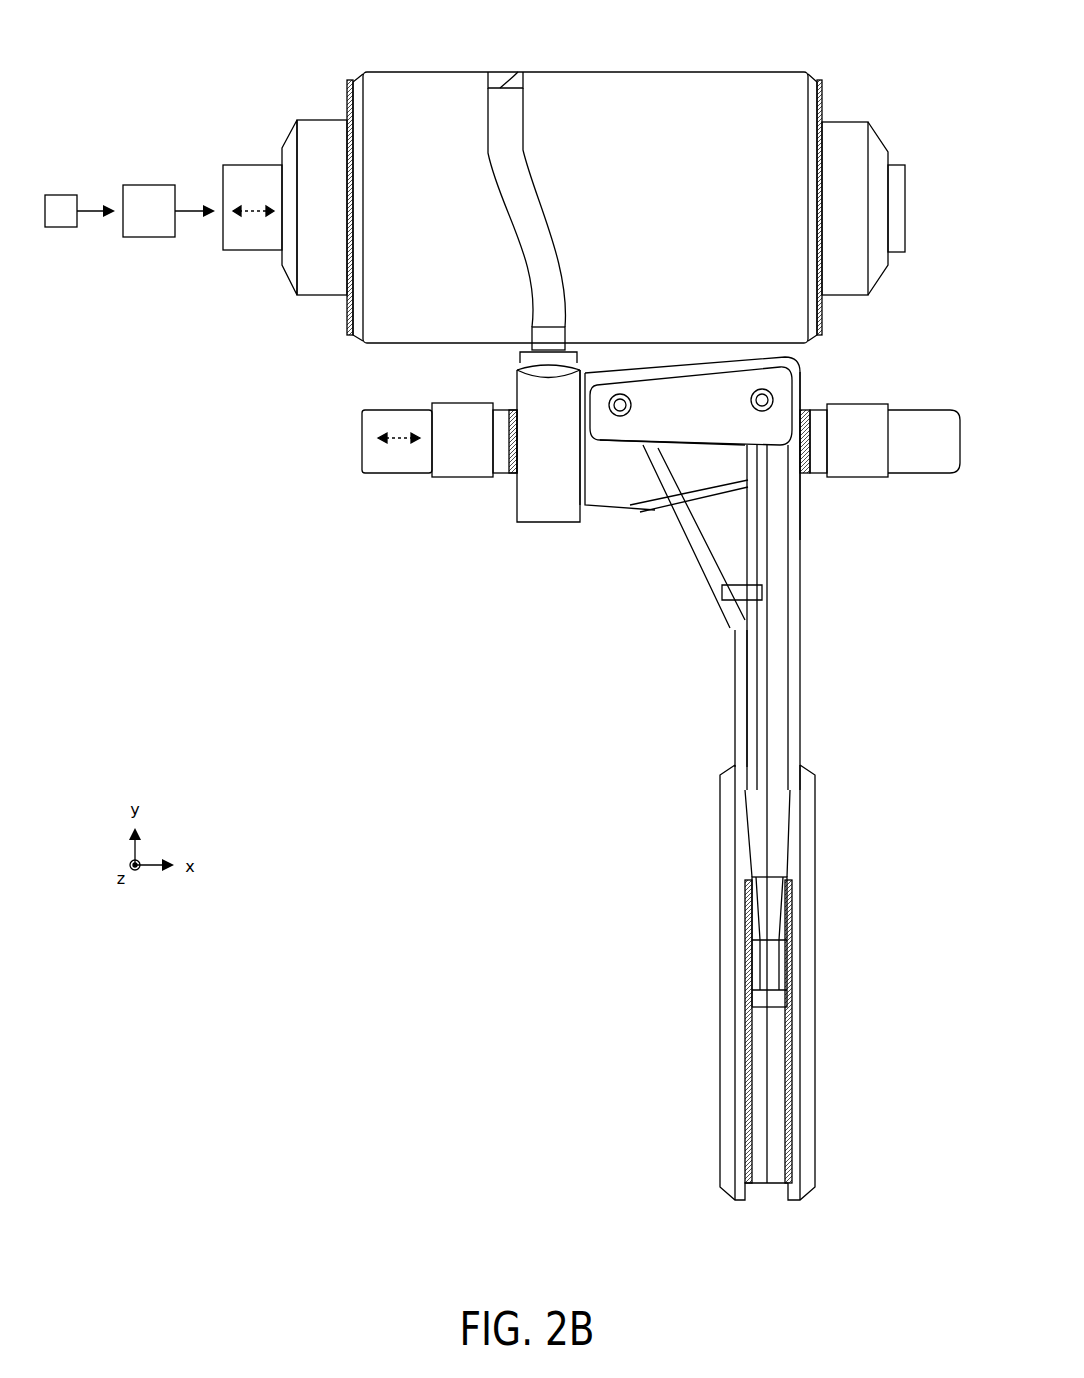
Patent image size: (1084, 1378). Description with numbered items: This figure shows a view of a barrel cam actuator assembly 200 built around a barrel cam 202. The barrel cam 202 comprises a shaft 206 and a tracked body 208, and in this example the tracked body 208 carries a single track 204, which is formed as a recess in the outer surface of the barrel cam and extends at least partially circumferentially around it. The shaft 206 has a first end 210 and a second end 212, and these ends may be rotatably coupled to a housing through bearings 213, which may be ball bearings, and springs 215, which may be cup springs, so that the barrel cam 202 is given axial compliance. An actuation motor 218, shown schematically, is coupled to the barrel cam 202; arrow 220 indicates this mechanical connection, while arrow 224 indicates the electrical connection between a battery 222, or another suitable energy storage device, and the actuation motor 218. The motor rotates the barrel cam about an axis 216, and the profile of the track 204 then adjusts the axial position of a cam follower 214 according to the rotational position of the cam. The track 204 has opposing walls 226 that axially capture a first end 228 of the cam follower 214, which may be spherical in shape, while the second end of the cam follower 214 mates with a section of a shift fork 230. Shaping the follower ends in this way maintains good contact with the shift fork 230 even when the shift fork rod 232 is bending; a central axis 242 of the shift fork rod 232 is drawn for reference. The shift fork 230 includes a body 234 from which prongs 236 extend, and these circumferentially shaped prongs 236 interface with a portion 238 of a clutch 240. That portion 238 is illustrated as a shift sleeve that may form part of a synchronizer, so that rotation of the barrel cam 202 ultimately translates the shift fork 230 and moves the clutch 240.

The barrel cam actuator assembly 200 is at (88, 70).
The barrel cam 202 is at (378, 54).
The track 204 is at (498, 74).
The shaft 206 is at (250, 176).
The tracked body 208 is at (443, 80).
The first end 210 is at (210, 158).
The second end 212 is at (920, 163).
The bearings 213 is at (330, 278).
The cam follower 214 is at (550, 338).
The springs 215 is at (293, 262).
The axis 216 is at (258, 218).
The actuation motor 218 is at (148, 237).
The arrow 220 is at (189, 222).
The battery 222 is at (62, 222).
The arrow 224 is at (90, 205).
The opposing walls 226 is at (523, 118).
The first end 228 is at (548, 325).
The shift fork 230 is at (578, 585).
The shift fork rod 232 is at (930, 490).
The body 234 is at (648, 520).
The prongs 236 is at (775, 935).
The portion 238 is at (765, 1140).
The clutch 240 is at (686, 1112).
The central axis 242 is at (400, 450).